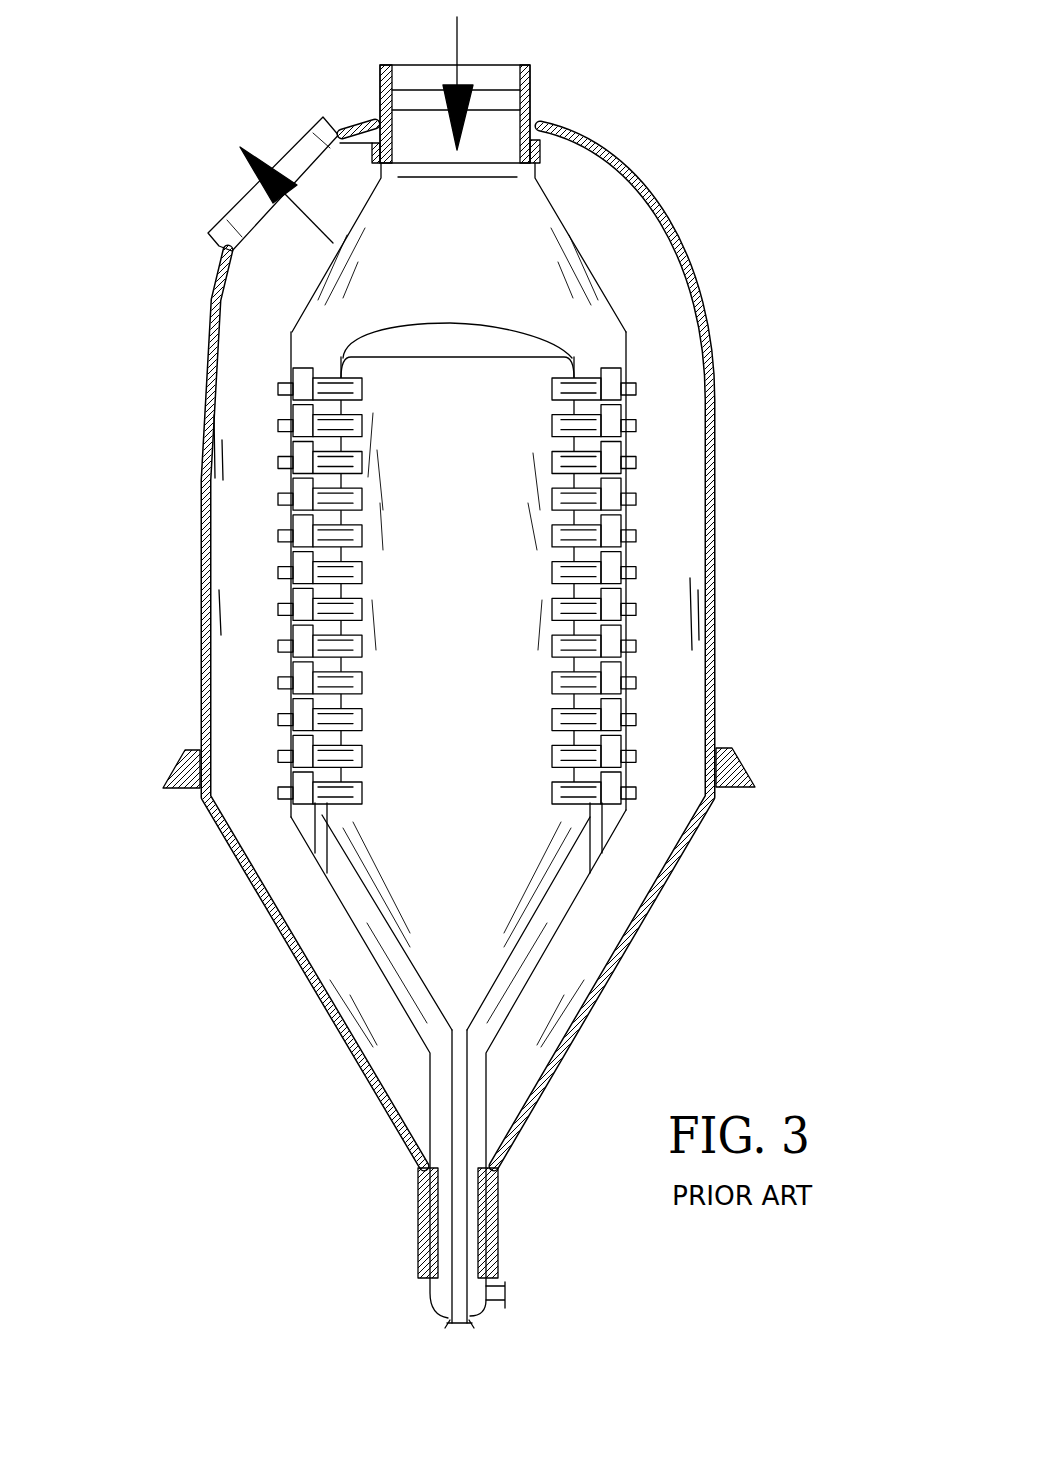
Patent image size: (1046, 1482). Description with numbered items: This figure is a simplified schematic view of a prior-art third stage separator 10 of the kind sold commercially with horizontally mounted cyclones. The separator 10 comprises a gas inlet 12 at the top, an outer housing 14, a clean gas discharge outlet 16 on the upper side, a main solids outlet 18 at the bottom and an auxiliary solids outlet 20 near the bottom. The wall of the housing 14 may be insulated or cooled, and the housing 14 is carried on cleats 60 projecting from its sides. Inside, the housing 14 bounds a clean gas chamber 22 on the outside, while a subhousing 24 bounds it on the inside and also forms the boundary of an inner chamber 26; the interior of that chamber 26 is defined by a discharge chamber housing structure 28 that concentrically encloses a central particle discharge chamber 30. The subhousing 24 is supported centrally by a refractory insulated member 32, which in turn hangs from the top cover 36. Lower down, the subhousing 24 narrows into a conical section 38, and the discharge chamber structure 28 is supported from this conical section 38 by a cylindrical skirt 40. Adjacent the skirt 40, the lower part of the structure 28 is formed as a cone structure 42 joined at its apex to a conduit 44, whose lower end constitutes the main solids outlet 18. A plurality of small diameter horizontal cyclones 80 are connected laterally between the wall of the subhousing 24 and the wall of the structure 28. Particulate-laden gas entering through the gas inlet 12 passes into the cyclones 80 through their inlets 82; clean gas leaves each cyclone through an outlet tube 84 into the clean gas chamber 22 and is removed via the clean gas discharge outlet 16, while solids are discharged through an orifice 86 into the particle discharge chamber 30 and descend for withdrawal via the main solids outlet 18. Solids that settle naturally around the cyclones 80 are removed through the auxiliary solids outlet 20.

The separator 10 is at (214, 912).
The gas inlet 12 is at (500, 128).
The housing 14 is at (724, 204).
The clean gas discharge outlet 16 is at (287, 150).
The main solids outlet 18 is at (455, 1335).
The auxiliary solids outlet 20 is at (512, 1293).
The clean gas chamber 22 is at (243, 675).
The subhousing 24 is at (293, 328).
The chamber 26 is at (427, 265).
The discharge chamber housing structure 28 is at (503, 338).
The particle discharge chamber 30 is at (443, 513).
The refractory insulated member 32 is at (380, 97).
The top cover 36 is at (622, 160).
The conical section 38 is at (583, 893).
The cylindrical skirt 40 is at (603, 827).
The cone structure 42 is at (490, 997).
The conduit 44 is at (467, 1090).
The cleats 60 is at (742, 768).
The cyclones 80 is at (307, 457).
The inlets 82 is at (610, 520).
The outlet tube 84 is at (636, 424).
The orifice 86 is at (552, 760).